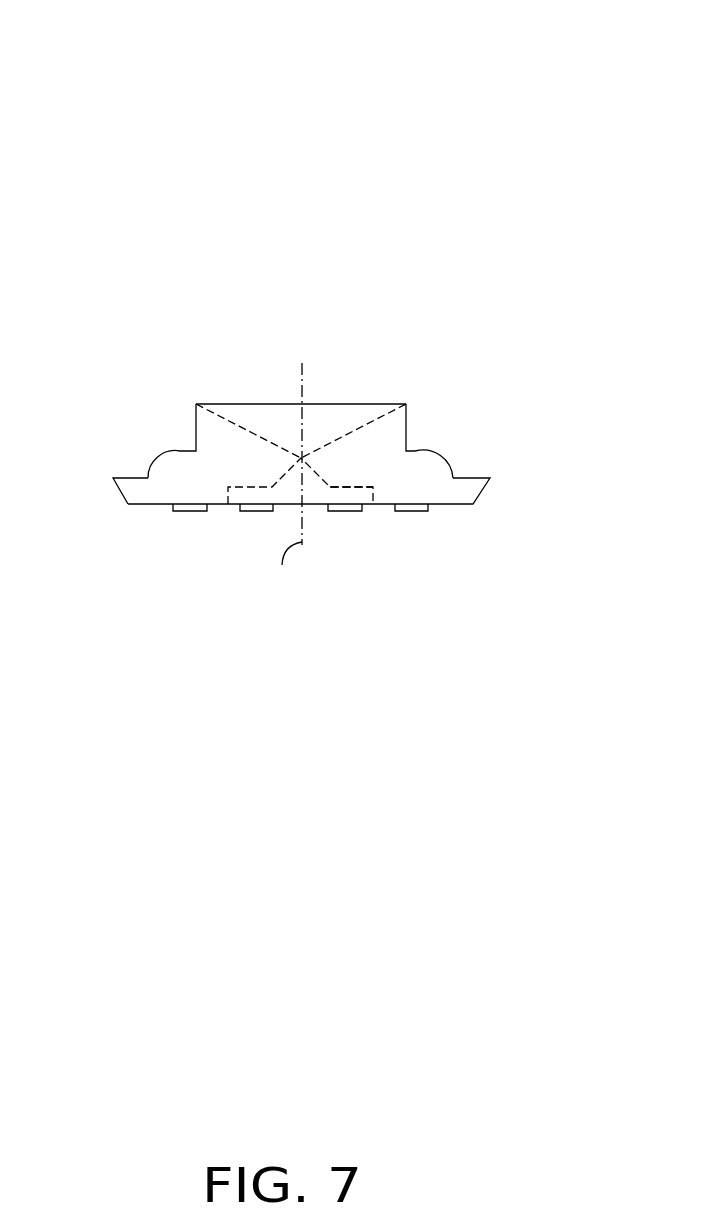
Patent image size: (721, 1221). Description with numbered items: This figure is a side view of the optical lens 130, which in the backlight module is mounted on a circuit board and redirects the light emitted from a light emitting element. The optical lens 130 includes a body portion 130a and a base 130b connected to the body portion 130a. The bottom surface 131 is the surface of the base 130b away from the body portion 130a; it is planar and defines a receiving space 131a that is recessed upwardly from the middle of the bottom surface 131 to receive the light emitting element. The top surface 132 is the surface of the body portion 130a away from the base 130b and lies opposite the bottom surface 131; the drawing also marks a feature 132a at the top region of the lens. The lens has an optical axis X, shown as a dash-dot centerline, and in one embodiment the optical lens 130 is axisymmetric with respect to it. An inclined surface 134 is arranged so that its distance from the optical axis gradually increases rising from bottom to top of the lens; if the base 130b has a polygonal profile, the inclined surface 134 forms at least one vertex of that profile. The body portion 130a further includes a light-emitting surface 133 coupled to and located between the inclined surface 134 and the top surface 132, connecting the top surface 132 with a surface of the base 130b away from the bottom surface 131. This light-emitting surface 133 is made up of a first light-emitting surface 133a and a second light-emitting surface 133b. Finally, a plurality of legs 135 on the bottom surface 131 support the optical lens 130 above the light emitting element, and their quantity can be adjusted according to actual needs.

The optical lens 130 is at (117, 65).
The body portion 130a is at (180, 462).
The base 130b is at (140, 488).
The bottom surface 131 is at (220, 504).
The receiving space 131a is at (343, 495).
The top surface 132 is at (227, 418).
The reflecting surface 132a is at (338, 425).
The light-emitting surface 133 is at (588, 393).
The first light-emitting surface 133a is at (408, 427).
The second light-emitting surface 133b is at (442, 458).
The inclined surface 134 is at (483, 493).
The legs 135 is at (183, 508).